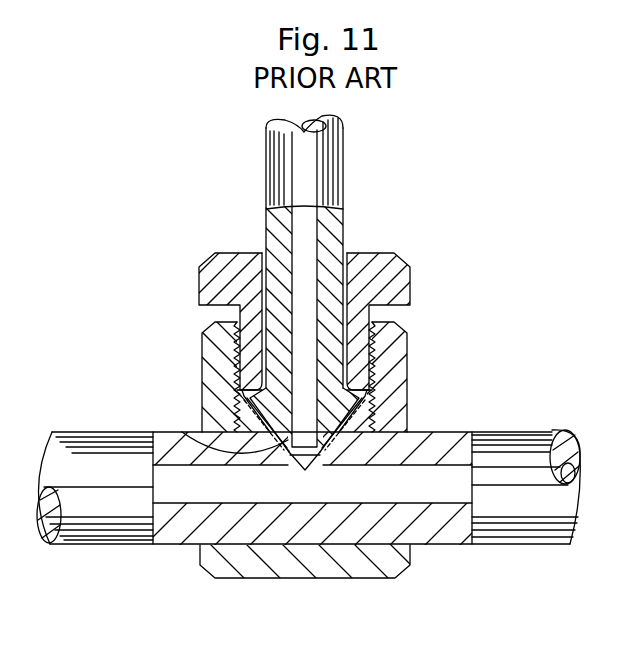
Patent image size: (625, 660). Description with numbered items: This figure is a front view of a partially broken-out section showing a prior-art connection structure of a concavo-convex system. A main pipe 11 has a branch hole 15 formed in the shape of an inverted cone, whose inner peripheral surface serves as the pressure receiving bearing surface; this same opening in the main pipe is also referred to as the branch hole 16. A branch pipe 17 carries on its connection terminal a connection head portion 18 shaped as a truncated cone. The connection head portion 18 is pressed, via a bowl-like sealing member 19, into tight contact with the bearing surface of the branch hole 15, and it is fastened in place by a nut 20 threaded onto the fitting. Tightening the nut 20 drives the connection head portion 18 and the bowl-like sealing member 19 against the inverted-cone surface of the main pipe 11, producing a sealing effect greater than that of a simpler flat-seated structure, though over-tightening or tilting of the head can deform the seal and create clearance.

The main pipe 11 is at (527, 430).
The branch hole 15 is at (308, 473).
The branch hole 16 is at (182, 430).
The branch pipe 17 is at (323, 161).
The connection head portion 18 is at (373, 396).
The bowl-like sealing member 19 is at (352, 403).
The nut 20 is at (395, 280).